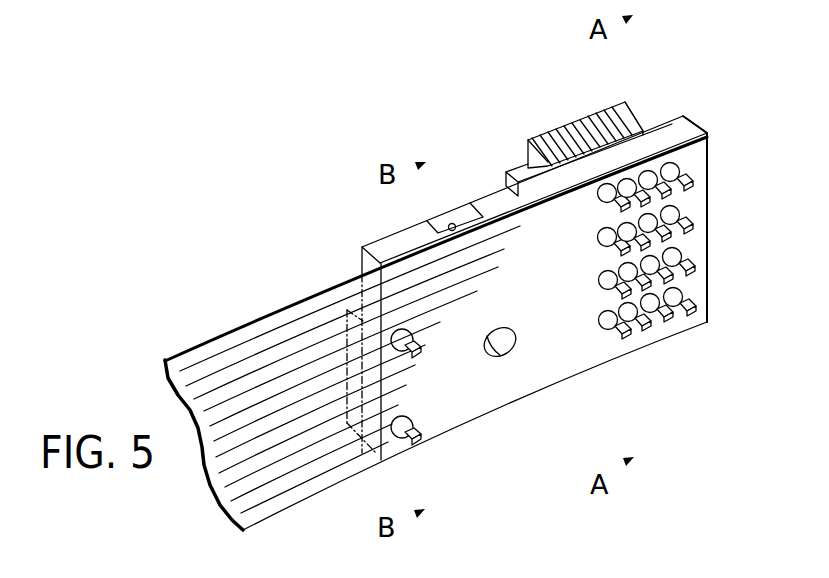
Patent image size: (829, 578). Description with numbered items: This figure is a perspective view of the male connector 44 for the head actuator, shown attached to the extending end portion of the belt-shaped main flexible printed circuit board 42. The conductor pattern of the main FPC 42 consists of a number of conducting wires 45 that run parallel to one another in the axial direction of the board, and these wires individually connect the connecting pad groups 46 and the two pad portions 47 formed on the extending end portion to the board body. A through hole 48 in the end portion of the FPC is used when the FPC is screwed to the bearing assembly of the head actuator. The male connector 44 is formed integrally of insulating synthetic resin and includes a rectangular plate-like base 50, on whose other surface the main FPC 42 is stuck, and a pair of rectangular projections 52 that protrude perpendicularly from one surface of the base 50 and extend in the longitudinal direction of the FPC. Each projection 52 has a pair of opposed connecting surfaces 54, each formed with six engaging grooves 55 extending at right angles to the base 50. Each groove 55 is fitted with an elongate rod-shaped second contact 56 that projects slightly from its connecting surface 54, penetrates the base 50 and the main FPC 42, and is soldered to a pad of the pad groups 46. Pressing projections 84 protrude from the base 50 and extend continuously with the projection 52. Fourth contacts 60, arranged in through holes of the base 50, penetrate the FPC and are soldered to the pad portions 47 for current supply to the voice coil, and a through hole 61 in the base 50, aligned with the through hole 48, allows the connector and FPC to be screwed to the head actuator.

The main flexible printed circuit board 42 is at (292, 298).
The male connector 44 is at (442, 168).
The conducting wires 45 is at (266, 372).
The connecting pad groups 46 is at (702, 200).
The pad portions 47 is at (415, 418).
The through hole 48 is at (513, 353).
The base 50 is at (698, 128).
The projections 52 is at (650, 112).
The connecting surfaces 54 is at (625, 100).
The engaging grooves 55 is at (606, 108).
The second contacts 56 is at (557, 127).
The fourth contacts 60 is at (419, 355).
The through hole 61 is at (493, 352).
The pressing projections 84 is at (512, 172).